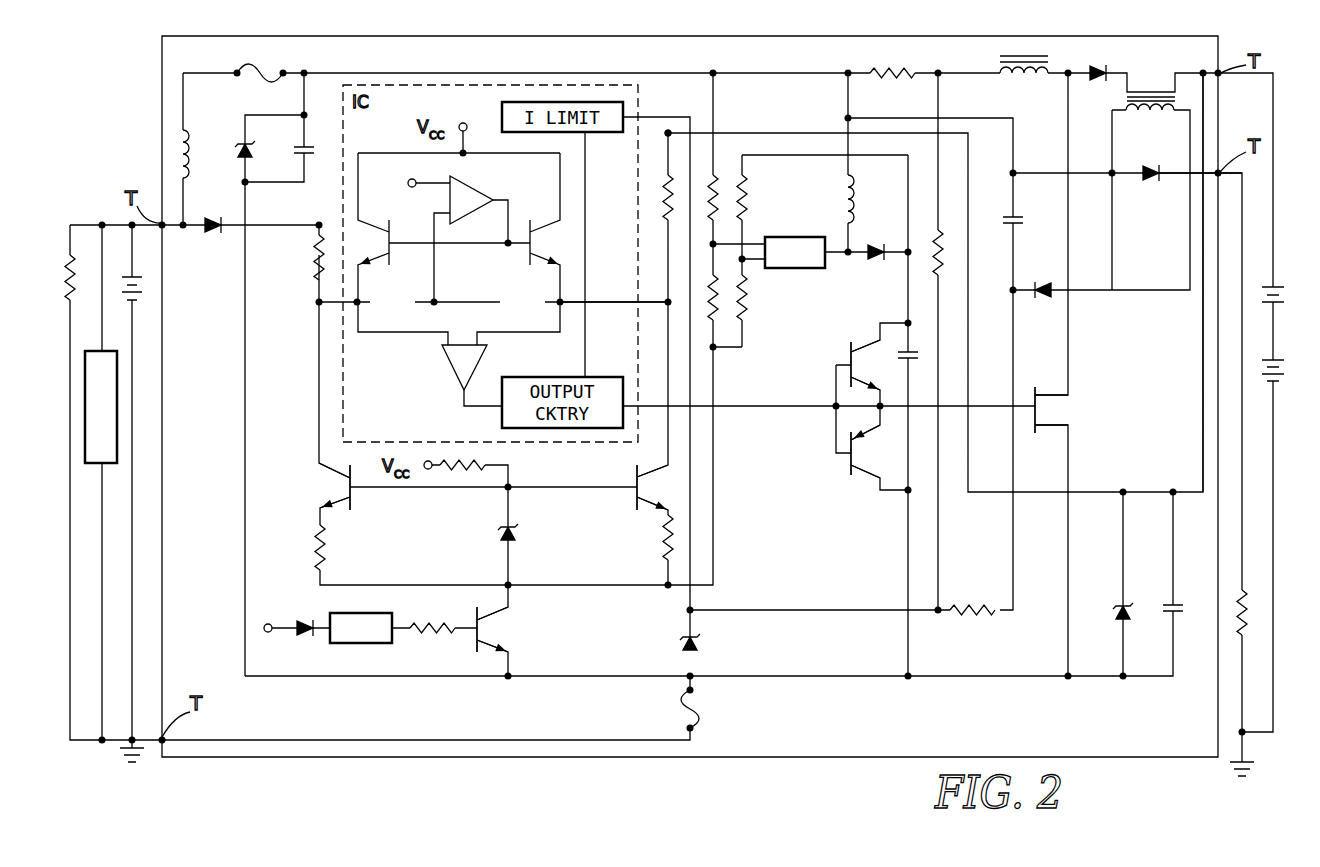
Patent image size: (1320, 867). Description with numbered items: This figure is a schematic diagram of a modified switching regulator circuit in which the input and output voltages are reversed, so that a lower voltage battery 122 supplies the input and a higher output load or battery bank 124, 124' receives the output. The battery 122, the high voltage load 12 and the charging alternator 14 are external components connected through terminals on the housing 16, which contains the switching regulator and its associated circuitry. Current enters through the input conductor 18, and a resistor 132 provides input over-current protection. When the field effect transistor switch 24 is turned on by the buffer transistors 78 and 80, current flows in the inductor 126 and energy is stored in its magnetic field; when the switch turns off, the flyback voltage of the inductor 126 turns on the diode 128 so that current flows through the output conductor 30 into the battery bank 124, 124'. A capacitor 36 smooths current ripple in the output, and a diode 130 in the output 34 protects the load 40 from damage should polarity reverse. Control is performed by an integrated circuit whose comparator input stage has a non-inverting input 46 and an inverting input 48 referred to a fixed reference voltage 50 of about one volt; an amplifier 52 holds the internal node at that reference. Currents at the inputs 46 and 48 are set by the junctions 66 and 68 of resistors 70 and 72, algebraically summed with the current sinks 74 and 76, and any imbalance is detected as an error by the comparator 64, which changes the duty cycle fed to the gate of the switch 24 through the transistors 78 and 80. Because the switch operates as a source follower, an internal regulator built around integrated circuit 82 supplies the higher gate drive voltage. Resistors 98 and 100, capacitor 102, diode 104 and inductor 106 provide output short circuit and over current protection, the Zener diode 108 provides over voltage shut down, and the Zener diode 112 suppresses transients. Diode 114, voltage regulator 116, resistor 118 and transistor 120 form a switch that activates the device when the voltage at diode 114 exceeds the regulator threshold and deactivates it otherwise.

The high voltage load 12 is at (72, 268).
The alternator 14 is at (117, 432).
The housing 16 is at (162, 105).
The input conductor 18 is at (178, 230).
The field effect transistor switch 24 is at (1035, 392).
The output conductor 30 is at (1207, 82).
The output 34 is at (1180, 178).
The capacitor 36 is at (1167, 604).
The load 40 is at (1238, 622).
The non-inverting input 46 is at (319, 308).
The inverting input 48 is at (610, 302).
The fixed reference voltage 50 is at (408, 186).
The amplifier 52 is at (470, 181).
The comparator 64 is at (453, 377).
The junction 66 is at (312, 238).
The junction 68 is at (668, 130).
The resistor 70 is at (316, 262).
The resistor 72 is at (663, 220).
The current sink 74 is at (352, 492).
The current sink 76 is at (635, 500).
The buffer transistor 78 is at (850, 347).
The buffer transistor 80 is at (850, 466).
The integrated circuit 82 is at (778, 268).
The resistor 98 is at (945, 250).
The resistor 100 is at (988, 618).
The capacitor 102 is at (1027, 220).
The diode 104 is at (1045, 297).
The inductor 106 is at (1143, 118).
The Zener diode 108 is at (693, 645).
The Zener diode 112 is at (1120, 604).
The diode 114 is at (305, 618).
The voltage regulator 116 is at (365, 612).
The resistor 118 is at (447, 633).
The transistor 120 is at (492, 633).
The lower voltage battery 122 is at (134, 303).
The higher output load or battery bank 124 is at (1217, 308).
The higher output load or battery bank 124' is at (1214, 381).
The inductor 126 is at (1012, 82).
The diode 128 is at (1098, 66).
The diode 130 is at (1145, 178).
The resistor 132 is at (893, 68).